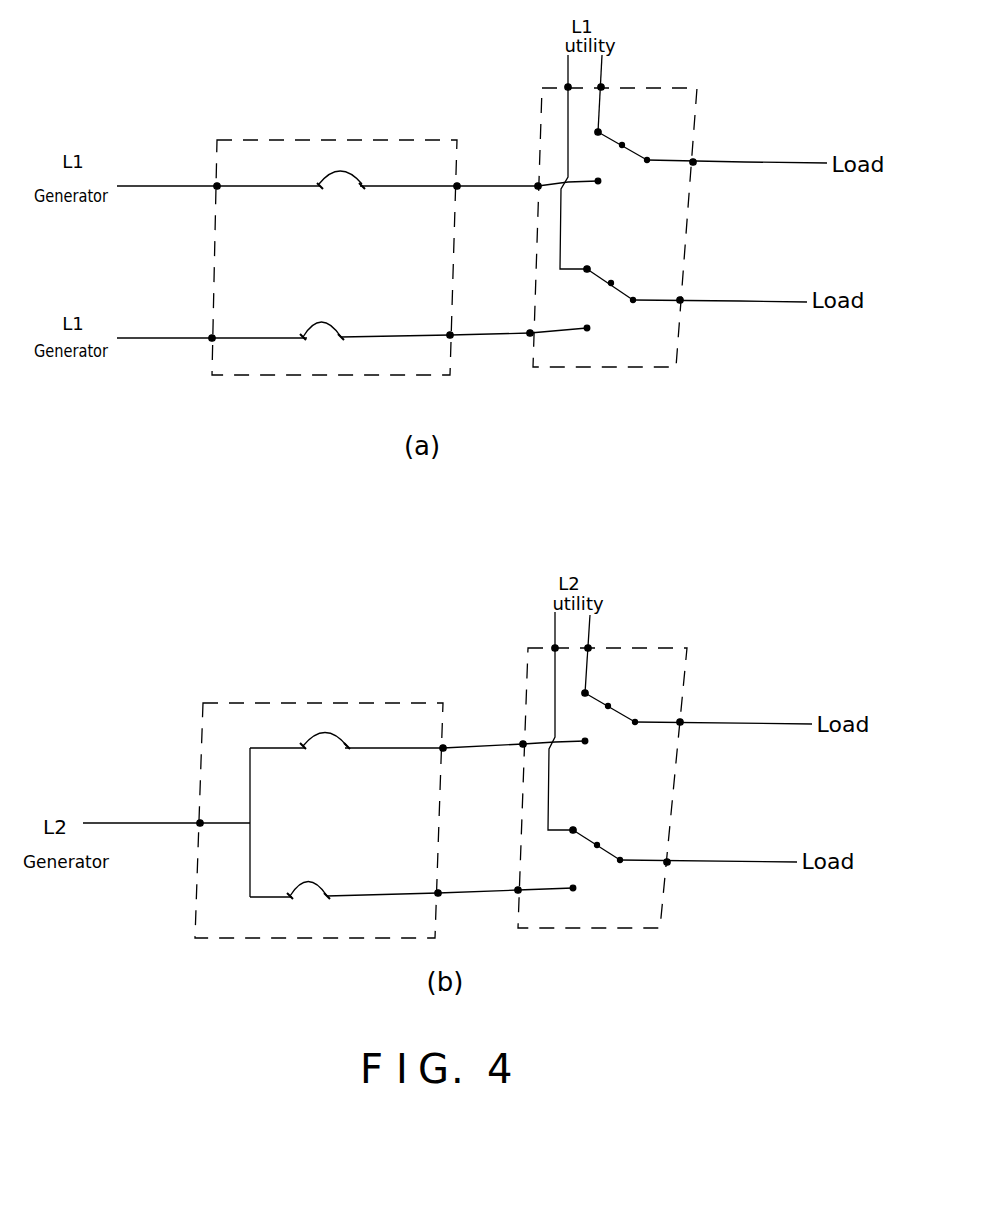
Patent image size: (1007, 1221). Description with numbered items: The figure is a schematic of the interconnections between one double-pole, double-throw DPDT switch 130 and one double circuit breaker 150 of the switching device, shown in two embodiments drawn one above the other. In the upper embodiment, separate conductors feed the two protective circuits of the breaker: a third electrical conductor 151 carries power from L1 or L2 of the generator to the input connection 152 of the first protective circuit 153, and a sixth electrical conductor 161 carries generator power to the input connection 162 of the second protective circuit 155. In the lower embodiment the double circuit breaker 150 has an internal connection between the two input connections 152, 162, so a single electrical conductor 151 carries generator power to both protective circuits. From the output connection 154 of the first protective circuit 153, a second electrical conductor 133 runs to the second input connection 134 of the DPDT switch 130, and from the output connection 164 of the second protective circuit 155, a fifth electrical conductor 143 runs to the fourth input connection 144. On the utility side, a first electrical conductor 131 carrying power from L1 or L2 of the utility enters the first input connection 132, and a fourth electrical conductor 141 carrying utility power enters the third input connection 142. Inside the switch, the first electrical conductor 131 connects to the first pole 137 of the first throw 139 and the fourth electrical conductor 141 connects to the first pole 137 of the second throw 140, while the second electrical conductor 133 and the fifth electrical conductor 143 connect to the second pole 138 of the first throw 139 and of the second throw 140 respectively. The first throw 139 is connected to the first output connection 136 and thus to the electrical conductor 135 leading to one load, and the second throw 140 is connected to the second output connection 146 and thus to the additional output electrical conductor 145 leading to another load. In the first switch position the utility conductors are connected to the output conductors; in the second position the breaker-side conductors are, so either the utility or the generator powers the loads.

The DPDT switch 130 is at (690, 208).
The first electrical conductor 131 is at (605, 63).
The first input connection 132 is at (605, 85).
The second electrical conductor 133 is at (489, 185).
The second input connection 134 is at (536, 184).
The electrical conductor 135 is at (745, 163).
The first output connection 136 is at (696, 159).
The first pole 137 is at (601, 130).
The second pole 138 is at (601, 186).
The first throw 139 is at (625, 145).
The second throw 140 is at (614, 281).
The fourth electrical conductor 141 is at (563, 65).
The third input connection 142 is at (565, 85).
The fifth electrical conductor 143 is at (481, 334).
The fourth input connection 144 is at (528, 330).
The additional output electrical conductor 145 is at (738, 301).
The second output connection 146 is at (684, 297).
The double circuit breaker 150 is at (249, 140).
The third electrical conductor 151 is at (150, 184).
The input connection 152 is at (214, 182).
The first protective circuit 153 is at (337, 203).
The output connection 154 is at (454, 189).
The second protective circuit 155 is at (323, 345).
The sixth electrical conductor 161 is at (145, 345).
The input connection 162 is at (209, 335).
The output connection 164 is at (448, 332).